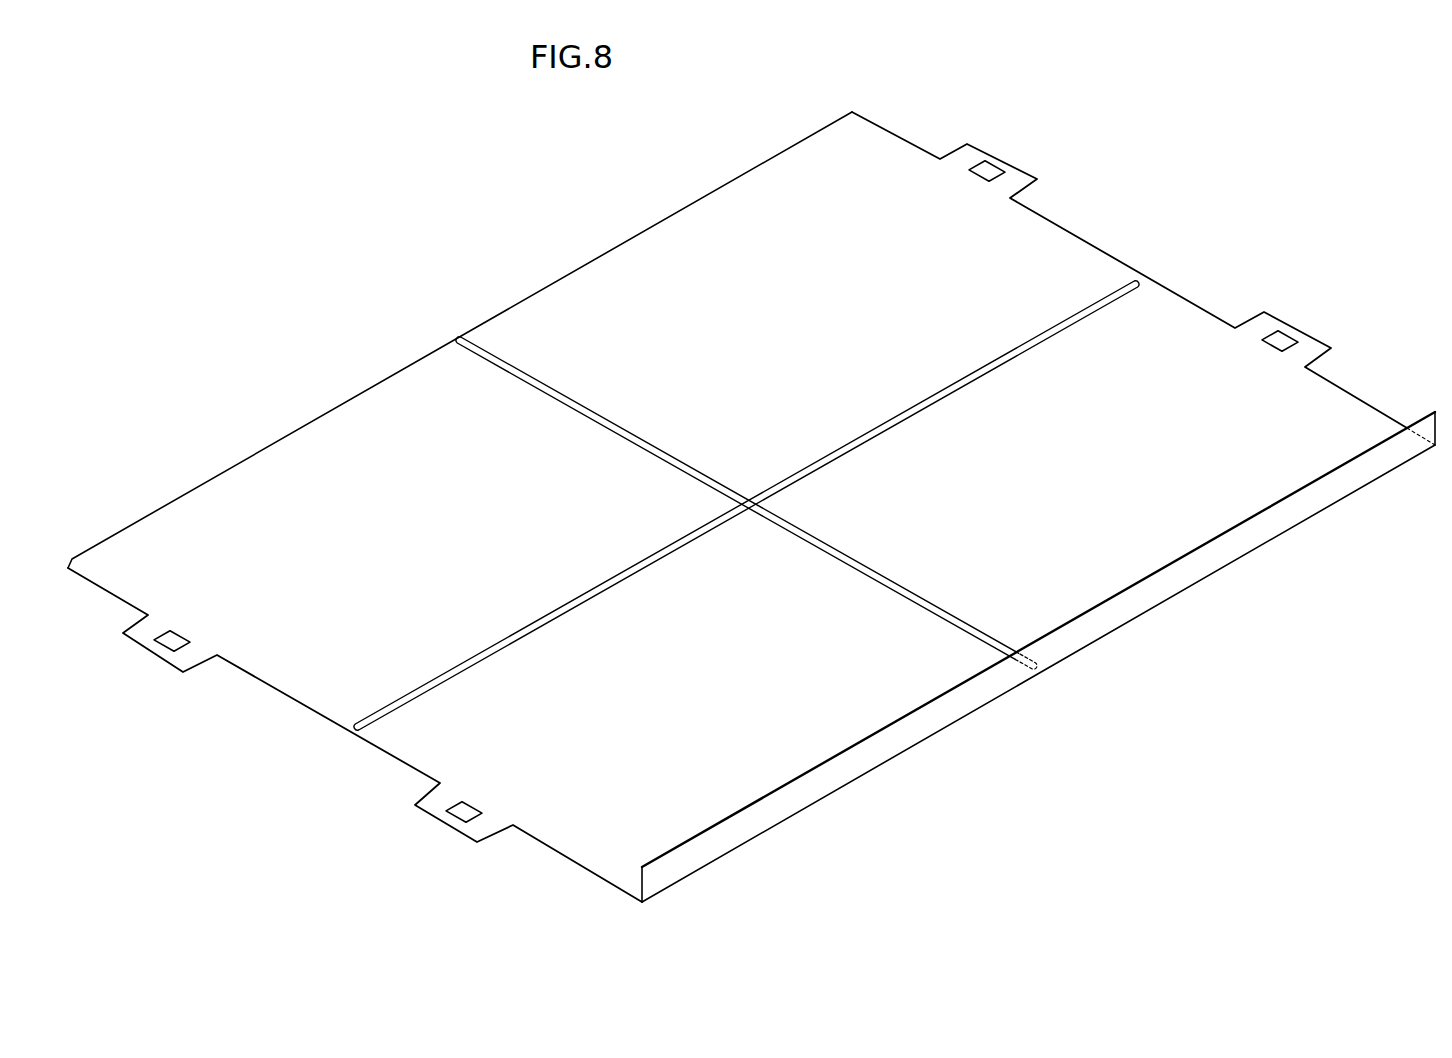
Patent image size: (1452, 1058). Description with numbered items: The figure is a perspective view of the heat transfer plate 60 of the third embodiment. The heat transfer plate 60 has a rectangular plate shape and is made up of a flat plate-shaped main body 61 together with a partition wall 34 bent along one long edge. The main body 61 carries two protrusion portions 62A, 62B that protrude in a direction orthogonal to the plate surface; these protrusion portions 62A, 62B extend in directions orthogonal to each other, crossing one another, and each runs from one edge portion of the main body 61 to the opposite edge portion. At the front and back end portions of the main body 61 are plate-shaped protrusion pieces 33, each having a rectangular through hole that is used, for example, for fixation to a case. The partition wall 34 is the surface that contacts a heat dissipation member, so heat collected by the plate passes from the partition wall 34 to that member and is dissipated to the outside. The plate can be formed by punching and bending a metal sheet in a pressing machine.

The heat transfer plate 60 is at (464, 190).
The main body 61 is at (820, 178).
The protrusion portion 62A is at (515, 370).
The protrusion portion 62B is at (1117, 290).
The protrusion piece 33 is at (972, 155).
The partition wall 34 is at (1378, 442).